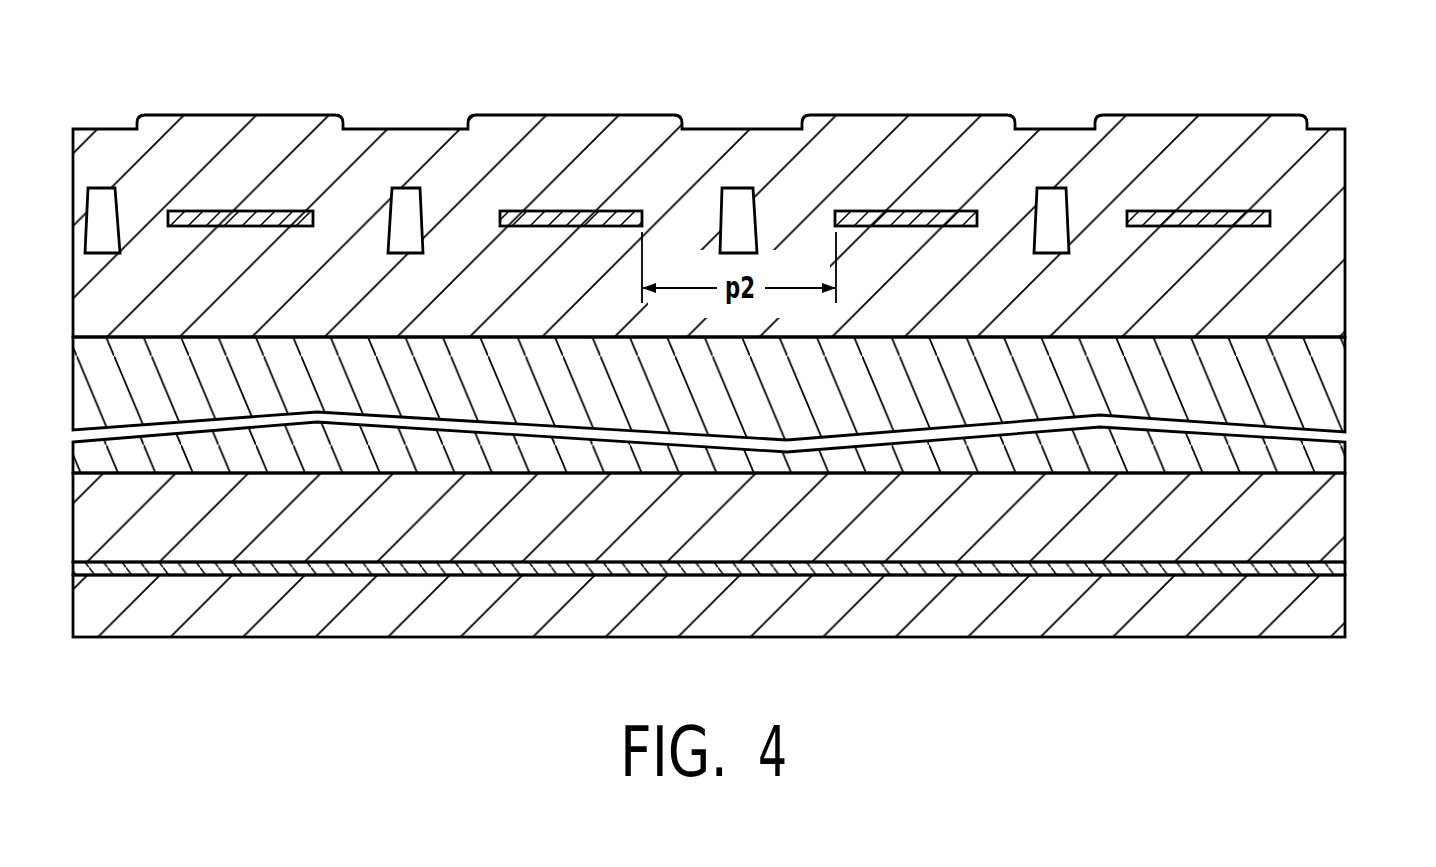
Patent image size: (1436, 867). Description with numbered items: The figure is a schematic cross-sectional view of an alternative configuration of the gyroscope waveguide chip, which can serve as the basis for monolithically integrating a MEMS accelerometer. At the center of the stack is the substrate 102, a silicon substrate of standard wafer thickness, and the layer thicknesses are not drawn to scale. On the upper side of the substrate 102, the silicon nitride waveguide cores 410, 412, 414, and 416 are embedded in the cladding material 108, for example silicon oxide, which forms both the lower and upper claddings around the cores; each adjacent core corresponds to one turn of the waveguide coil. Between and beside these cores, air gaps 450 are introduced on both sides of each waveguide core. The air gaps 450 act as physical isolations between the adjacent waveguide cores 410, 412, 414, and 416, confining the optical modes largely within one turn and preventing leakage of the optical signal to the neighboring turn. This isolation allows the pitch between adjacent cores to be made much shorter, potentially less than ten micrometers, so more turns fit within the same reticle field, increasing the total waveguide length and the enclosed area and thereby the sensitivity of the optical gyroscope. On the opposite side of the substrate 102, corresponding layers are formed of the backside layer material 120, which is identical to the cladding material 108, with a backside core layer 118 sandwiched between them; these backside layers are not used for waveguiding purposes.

The cladding material 108 is at (1353, 128).
The substrate 102 is at (1333, 401).
The backside layer material 120 is at (1353, 473).
The backside core layer 118 is at (1150, 568).
The air gaps 450 is at (98, 188).
The waveguide core 410 is at (260, 211).
The waveguide core 412 is at (580, 211).
The waveguide core 414 is at (930, 211).
The waveguide core 416 is at (1207, 211).